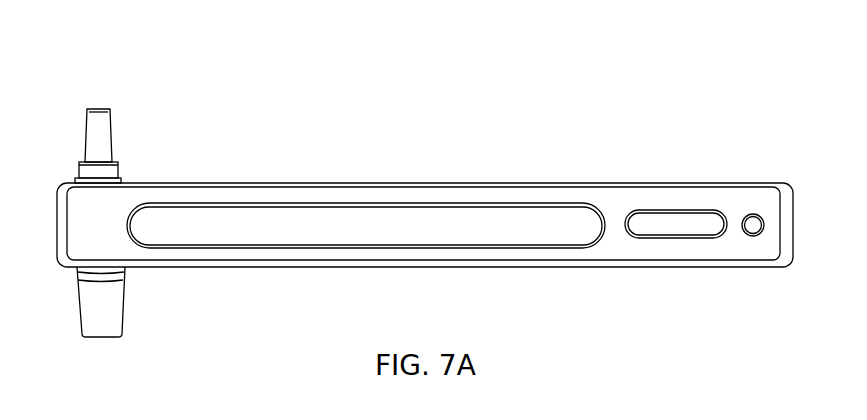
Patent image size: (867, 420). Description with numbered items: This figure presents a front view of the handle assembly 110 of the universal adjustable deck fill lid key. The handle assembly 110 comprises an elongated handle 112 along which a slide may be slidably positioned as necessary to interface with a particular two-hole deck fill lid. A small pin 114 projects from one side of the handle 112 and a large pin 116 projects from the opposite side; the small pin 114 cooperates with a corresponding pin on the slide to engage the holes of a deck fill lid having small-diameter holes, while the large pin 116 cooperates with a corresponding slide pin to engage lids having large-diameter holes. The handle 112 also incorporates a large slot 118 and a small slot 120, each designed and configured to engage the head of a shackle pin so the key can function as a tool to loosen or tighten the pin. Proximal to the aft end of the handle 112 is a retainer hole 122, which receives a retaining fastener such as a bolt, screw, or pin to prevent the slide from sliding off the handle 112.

The handle assembly 110 is at (310, 112).
The handle 112 is at (528, 175).
The small pin 114 is at (105, 128).
The large pin 116 is at (109, 314).
The large slot 118 is at (318, 230).
The small slot 120 is at (647, 230).
The retainer hole 122 is at (755, 230).